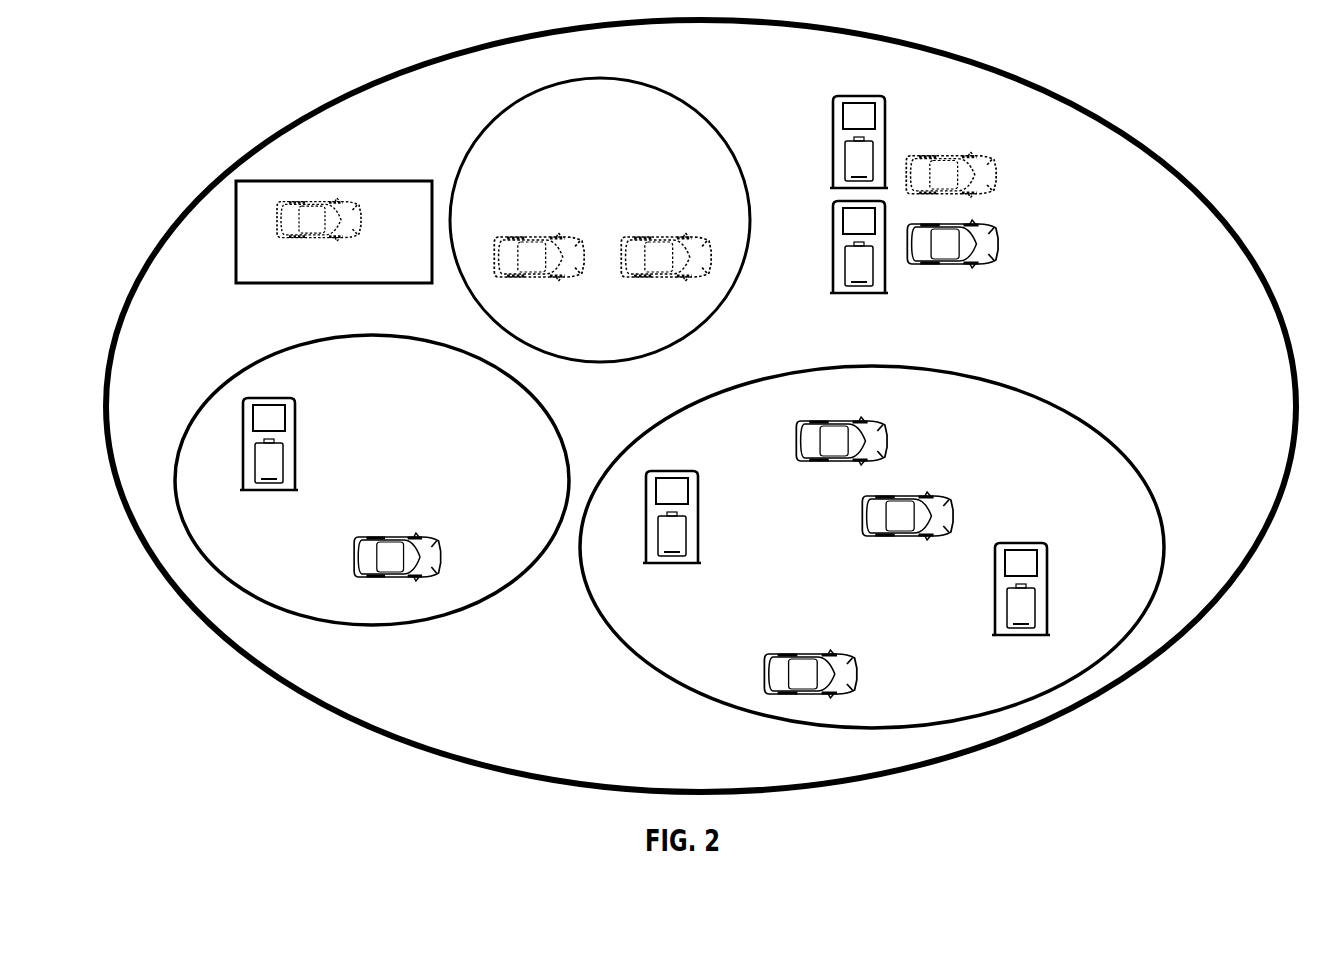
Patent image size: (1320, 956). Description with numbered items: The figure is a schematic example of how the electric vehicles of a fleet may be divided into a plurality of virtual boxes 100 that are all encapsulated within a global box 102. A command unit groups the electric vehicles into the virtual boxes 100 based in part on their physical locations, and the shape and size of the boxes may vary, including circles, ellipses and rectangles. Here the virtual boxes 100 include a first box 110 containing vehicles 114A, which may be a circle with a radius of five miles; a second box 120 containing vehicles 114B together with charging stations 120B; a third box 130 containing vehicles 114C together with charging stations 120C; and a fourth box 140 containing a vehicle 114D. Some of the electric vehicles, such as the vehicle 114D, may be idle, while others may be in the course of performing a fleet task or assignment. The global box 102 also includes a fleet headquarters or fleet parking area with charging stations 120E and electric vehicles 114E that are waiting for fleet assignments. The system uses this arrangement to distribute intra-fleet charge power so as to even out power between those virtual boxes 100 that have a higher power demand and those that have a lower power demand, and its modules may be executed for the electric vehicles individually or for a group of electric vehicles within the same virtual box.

The virtual boxes 100 is at (477, 71).
The global box 102 is at (1070, 77).
The first box 110 is at (627, 69).
The vehicles 114A is at (568, 210).
The vehicles 114B is at (387, 513).
The vehicles 114C is at (914, 460).
The vehicle 114D is at (335, 234).
The electric vehicles 114E is at (1014, 198).
The second box 120 is at (371, 328).
The charging stations 120B is at (313, 421).
The charging stations 120C is at (682, 448).
The charging stations 120E is at (905, 99).
The third box 130 is at (1002, 370).
The fourth box 140 is at (320, 147).